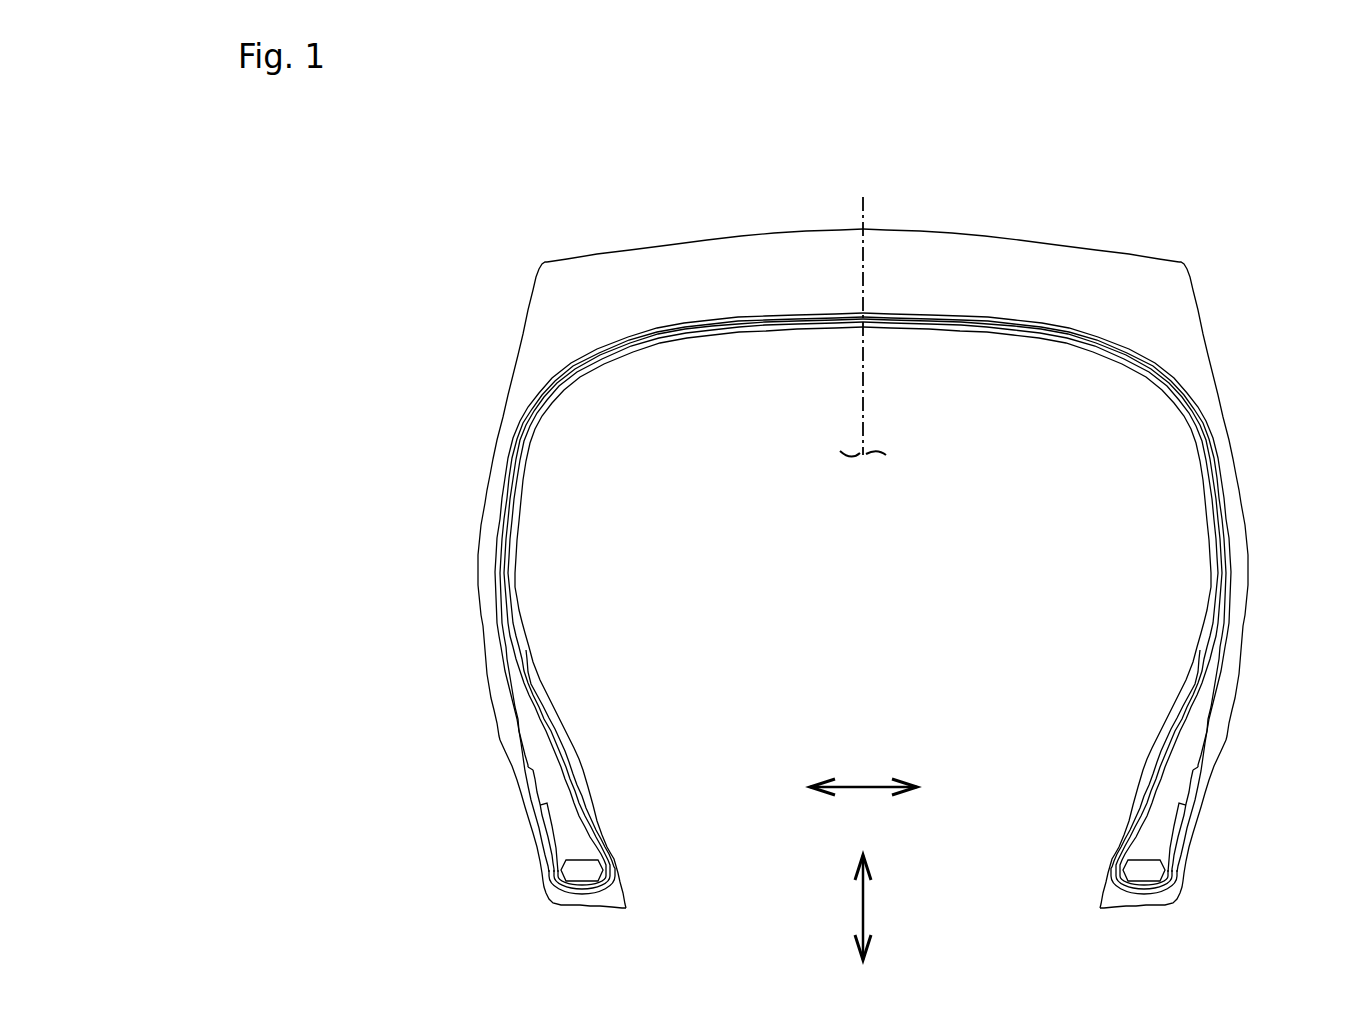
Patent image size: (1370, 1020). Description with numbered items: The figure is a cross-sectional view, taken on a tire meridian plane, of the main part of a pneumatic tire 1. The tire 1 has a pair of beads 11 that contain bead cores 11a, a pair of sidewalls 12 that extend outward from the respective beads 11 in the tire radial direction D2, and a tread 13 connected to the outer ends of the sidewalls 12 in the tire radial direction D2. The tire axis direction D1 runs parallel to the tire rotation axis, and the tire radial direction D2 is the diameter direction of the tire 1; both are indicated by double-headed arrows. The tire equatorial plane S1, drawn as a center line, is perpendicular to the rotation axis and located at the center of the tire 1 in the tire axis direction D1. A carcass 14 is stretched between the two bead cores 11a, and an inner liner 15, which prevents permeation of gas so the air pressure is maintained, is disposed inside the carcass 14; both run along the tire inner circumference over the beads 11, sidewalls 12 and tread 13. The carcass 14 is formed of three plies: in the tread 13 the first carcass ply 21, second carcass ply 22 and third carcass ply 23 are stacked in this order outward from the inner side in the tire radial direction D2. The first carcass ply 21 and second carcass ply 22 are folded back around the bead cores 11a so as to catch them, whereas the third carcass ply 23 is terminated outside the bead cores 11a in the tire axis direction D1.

The pneumatic tire 1 is at (1235, 177).
The bead 11 is at (506, 833).
The bead core 11a is at (585, 866).
The sidewall 12 is at (478, 438).
The tread 13 is at (813, 221).
The carcass 14 is at (1089, 352).
The inner liner 15 is at (1046, 346).
The first carcass ply 21 is at (1200, 665).
The second carcass ply 22 is at (1190, 697).
The third carcass ply 23 is at (1227, 657).
The tire equatorial plane S1 is at (863, 395).
The tire axis direction D1 is at (863, 798).
The tire radial direction D2 is at (875, 907).